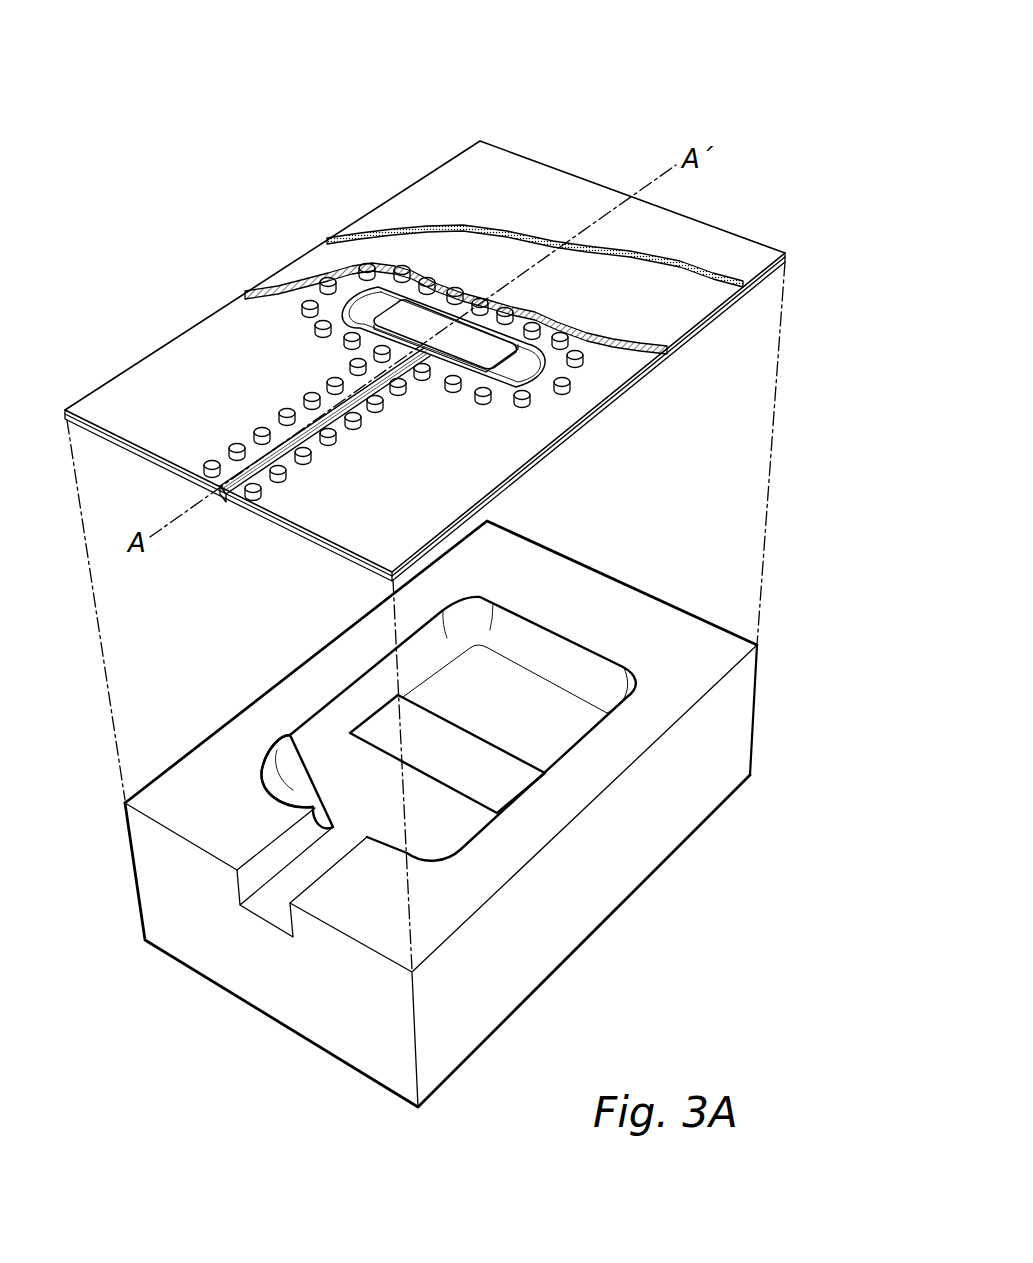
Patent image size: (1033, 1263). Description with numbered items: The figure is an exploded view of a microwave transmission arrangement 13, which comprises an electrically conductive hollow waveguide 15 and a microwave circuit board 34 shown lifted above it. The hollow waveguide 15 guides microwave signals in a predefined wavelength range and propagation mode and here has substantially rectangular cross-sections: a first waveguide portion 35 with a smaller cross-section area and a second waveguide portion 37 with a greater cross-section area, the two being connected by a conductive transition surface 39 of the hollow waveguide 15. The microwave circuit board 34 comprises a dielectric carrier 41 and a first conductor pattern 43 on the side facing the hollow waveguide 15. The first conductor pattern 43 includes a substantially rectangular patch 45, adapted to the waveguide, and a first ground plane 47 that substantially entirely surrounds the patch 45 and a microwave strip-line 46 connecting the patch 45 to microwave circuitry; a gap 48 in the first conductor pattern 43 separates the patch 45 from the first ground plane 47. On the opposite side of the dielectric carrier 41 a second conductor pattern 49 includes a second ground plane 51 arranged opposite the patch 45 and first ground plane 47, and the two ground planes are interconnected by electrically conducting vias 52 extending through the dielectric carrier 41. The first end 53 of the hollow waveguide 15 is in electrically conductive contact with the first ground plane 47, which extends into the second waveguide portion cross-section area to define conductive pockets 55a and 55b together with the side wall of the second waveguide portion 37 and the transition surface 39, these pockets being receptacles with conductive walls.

The microwave transmission arrangement 13 is at (640, 100).
The electrically conductive hollow waveguide 15 is at (724, 597).
The microwave circuit board 34 is at (120, 325).
The first waveguide portion 35 is at (493, 784).
The second waveguide portion 37 is at (595, 690).
The conductive transition surface 39 is at (515, 708).
The dielectric carrier 41 is at (305, 242).
The first conductor pattern 43 is at (188, 338).
The patch 45 is at (477, 352).
The microwave strip-line 46 is at (228, 494).
The first ground plane 47 is at (412, 482).
The gap 48 is at (452, 318).
The second conductor pattern 49 is at (430, 190).
The second ground plane 51 is at (567, 223).
The electrically conducting vias 52 is at (430, 282).
The first end 53 is at (710, 663).
The conductive pocket 55a is at (490, 668).
The conductive pocket 55b is at (348, 790).